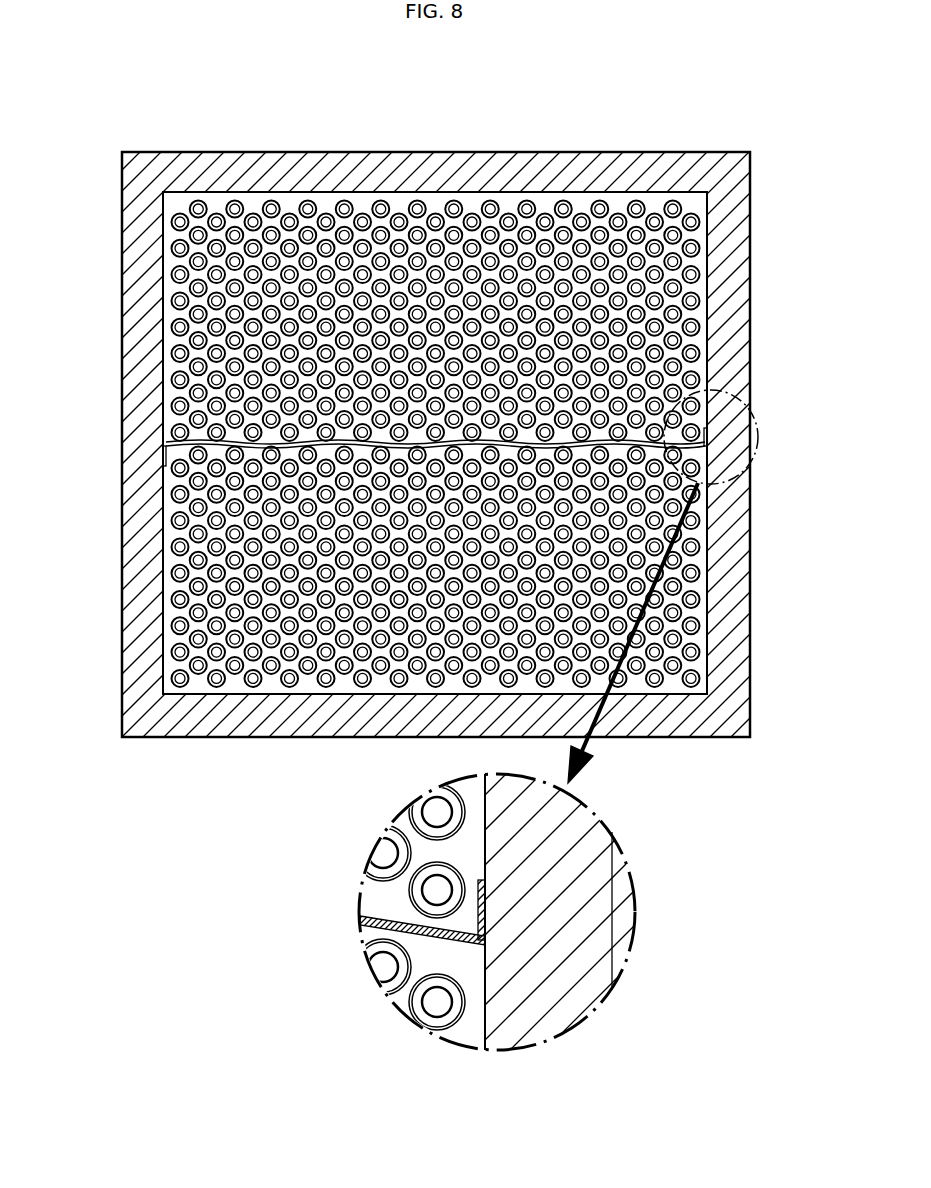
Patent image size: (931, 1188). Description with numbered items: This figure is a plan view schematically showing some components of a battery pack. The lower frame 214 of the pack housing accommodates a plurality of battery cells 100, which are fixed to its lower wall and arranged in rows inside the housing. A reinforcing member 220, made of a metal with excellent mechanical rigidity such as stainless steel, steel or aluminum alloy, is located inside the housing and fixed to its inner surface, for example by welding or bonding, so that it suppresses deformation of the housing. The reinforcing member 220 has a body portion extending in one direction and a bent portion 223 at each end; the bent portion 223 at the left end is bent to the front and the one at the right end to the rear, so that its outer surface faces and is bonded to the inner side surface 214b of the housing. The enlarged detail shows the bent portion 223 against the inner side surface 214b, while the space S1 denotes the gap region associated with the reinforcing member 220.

The lower frame 214 is at (259, 100).
The inner side surface 214b is at (162, 329).
The space S1 is at (216, 452).
The battery cells 100 is at (190, 413).
The reinforcing member 220 is at (706, 460).
The bent portion 223 is at (470, 878).